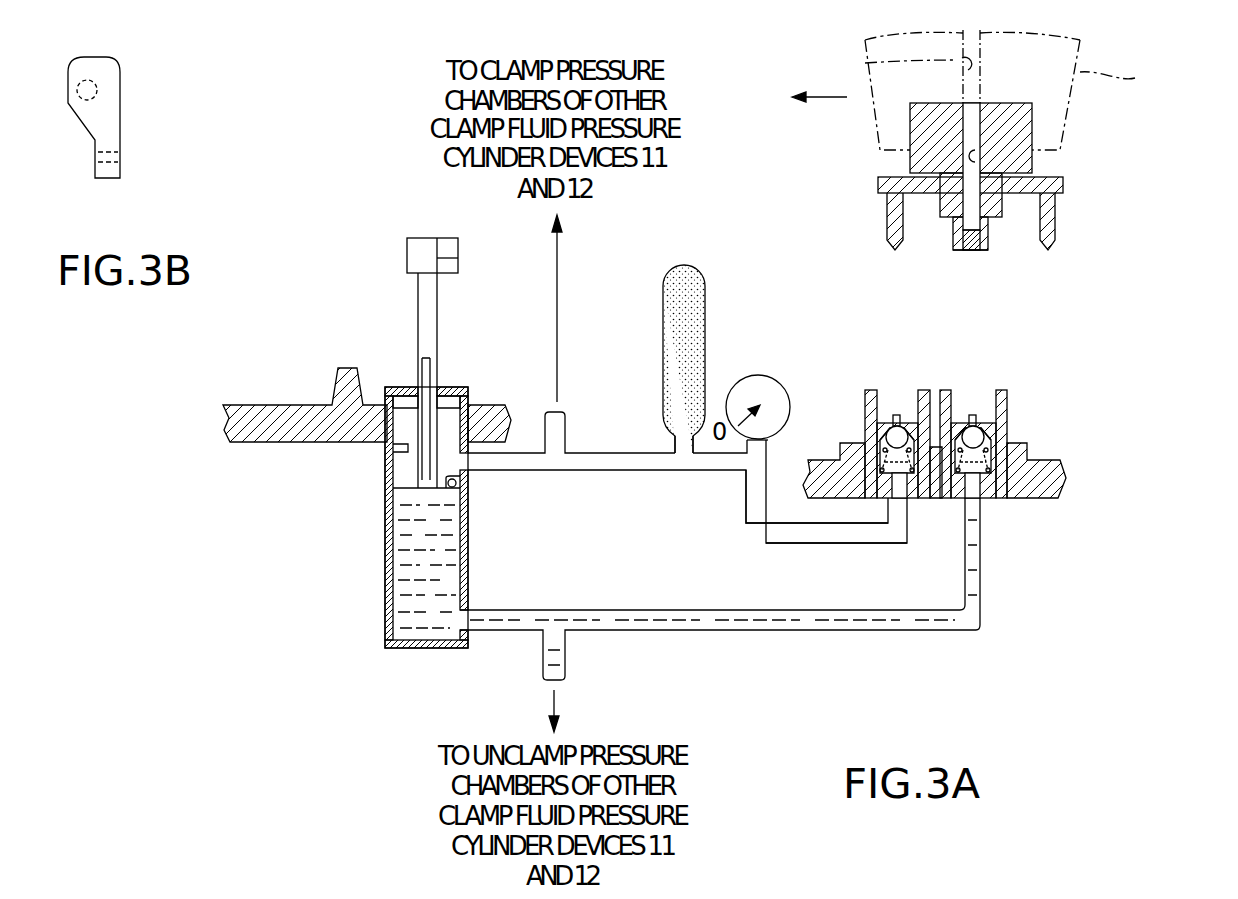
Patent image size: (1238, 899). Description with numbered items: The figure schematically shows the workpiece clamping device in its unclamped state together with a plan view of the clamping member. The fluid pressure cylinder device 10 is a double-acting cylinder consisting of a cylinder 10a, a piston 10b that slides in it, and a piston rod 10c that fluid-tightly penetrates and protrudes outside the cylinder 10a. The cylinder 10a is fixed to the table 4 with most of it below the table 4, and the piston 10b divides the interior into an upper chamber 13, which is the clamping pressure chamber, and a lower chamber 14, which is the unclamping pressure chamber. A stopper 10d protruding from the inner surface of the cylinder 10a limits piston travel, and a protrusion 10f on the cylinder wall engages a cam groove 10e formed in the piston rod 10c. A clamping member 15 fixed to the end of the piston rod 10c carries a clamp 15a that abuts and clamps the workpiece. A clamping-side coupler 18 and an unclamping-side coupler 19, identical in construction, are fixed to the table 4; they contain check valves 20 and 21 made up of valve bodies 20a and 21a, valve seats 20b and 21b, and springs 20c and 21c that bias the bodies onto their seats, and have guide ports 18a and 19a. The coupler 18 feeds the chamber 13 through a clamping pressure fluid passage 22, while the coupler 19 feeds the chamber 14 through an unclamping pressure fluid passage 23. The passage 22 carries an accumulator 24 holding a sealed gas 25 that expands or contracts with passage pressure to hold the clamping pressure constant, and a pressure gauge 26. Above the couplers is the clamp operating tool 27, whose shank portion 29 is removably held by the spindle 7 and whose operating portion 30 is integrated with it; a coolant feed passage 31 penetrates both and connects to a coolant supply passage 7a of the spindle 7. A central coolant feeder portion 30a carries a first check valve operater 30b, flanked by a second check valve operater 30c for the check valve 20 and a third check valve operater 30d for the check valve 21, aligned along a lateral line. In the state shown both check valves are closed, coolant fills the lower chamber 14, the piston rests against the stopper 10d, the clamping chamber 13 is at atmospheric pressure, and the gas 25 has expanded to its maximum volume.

In FIG. 3A, the table 4 is at (270, 443).
In FIG. 3A, the spindle 7 is at (1135, 78).
In FIG. 3A, the coolant supply passage 7a is at (862, 65).
In FIG. 3A, the fluid pressure cylinder device 10 is at (432, 460).
In FIG. 3A, the cylinder 10a is at (388, 570).
In FIG. 3A, the piston 10b is at (408, 498).
In FIG. 3A, the piston rod 10c is at (425, 313).
In FIG. 3A, the stopper 10d is at (462, 490).
In FIG. 3A, the cam groove 10e is at (418, 412).
In FIG. 3A, the protrusion 10f is at (398, 447).
In FIG. 3A, the upper chamber 13 is at (445, 415).
In FIG. 3A, the lower chamber 14 is at (405, 618).
In FIG. 3B, the clamping member 15 is at (107, 117).
In FIG. 3A, the clamping member 15 is at (415, 253).
In FIG. 3B, the clamp 15a is at (112, 168).
In FIG. 3A, the clamp 15a is at (450, 248).
In FIG. 3A, the clamping-side coupler 18 is at (912, 500).
In FIG. 3A, the guide port 18a is at (910, 427).
In FIG. 3A, the unclamping-side coupler 19 is at (996, 500).
In FIG. 3A, the guide port 19a is at (958, 427).
In FIG. 3A, the check valve 20 is at (855, 384).
In FIG. 3A, the valve body 20a is at (895, 415).
In FIG. 3A, the valve seat 20b is at (886, 432).
In FIG. 3A, the spring 20c is at (928, 347).
In FIG. 3A, the check valve 21 is at (1066, 384).
In FIG. 3A, the valve body 21a is at (976, 418).
In FIG. 3A, the valve seat 21b is at (985, 432).
In FIG. 3A, the spring 21c is at (992, 453).
In FIG. 3A, the clamping pressure fluid passage 22 is at (820, 530).
In FIG. 3A, the unclamping pressure fluid passage 23 is at (745, 640).
In FIG. 3A, the accumulator 24 is at (660, 396).
In FIG. 3A, the gas 25 is at (688, 312).
In FIG. 3A, the pressure gauge 26 is at (750, 392).
In FIG. 3A, the clamp operating tool 27 is at (1005, 164).
In FIG. 3A, the shank portion 29 is at (925, 140).
In FIG. 3A, the operating portion 30 is at (882, 183).
In FIG. 3A, the coolant feeder portion 30a is at (990, 250).
In FIG. 3A, the first check valve operater 30b is at (971, 252).
In FIG. 3A, the second check valve operater 30c is at (891, 232).
In FIG. 3A, the third check valve operater 30d is at (1048, 232).
In FIG. 3A, the coolant feed passage 31 is at (975, 163).